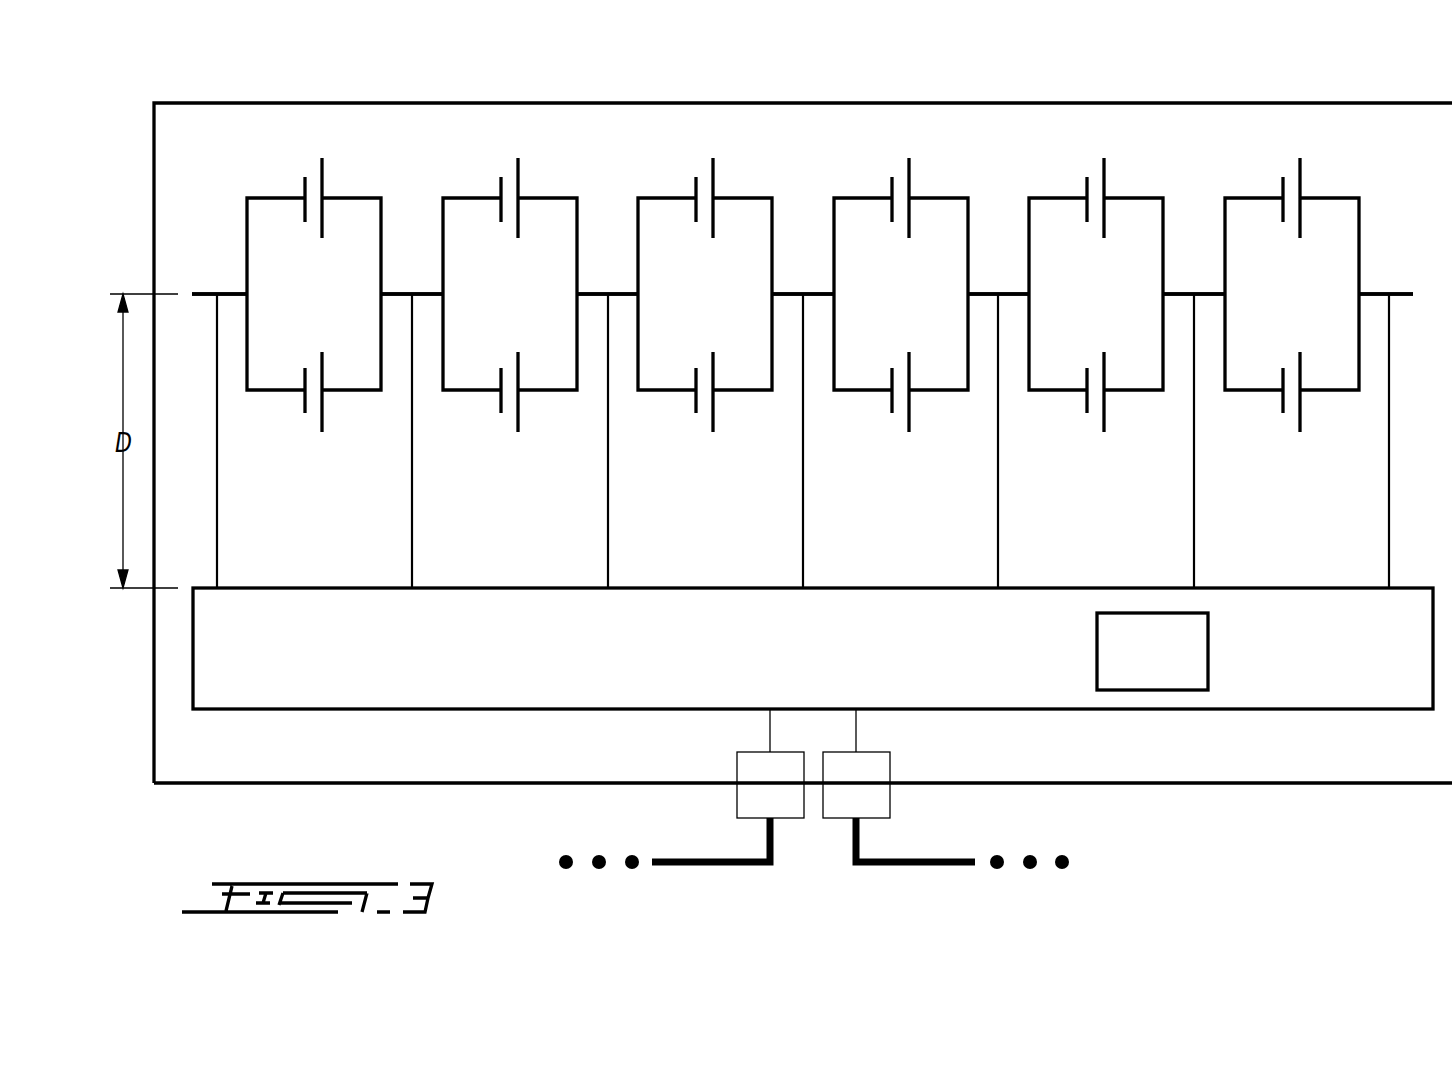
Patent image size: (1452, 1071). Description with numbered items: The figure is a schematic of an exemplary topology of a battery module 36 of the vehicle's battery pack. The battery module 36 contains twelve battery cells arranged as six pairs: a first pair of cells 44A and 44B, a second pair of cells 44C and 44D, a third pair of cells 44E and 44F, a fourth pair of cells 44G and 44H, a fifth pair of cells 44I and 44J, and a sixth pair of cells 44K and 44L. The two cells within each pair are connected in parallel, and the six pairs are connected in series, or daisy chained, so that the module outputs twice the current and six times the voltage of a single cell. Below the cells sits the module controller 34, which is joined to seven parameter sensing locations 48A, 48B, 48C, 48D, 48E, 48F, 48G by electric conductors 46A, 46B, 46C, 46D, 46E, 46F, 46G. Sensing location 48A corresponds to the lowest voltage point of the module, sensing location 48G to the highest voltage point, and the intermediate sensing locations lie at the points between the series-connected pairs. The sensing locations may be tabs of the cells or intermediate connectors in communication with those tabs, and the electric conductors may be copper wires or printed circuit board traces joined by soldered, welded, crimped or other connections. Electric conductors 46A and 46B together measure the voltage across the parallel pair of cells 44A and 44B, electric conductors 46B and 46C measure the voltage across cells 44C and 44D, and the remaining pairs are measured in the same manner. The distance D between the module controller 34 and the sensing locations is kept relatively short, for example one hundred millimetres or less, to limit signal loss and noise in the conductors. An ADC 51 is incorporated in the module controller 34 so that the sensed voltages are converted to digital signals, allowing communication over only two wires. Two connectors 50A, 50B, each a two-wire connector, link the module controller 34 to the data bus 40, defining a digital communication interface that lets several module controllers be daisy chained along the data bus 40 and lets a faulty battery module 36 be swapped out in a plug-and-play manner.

The battery module 36 is at (710, 102).
The module controller 34 is at (403, 675).
The ADC 51 is at (1208, 652).
The battery cell 44A is at (313, 180).
The battery cell 44B is at (313, 412).
The battery cell 44C is at (509, 180).
The battery cell 44D is at (509, 412).
The battery cell 44E is at (704, 180).
The battery cell 44F is at (704, 412).
The battery cell 44G is at (900, 180).
The battery cell 44H is at (900, 412).
The battery cell 44I is at (1095, 180).
The battery cell 44J is at (1095, 412).
The battery cell 44K is at (1291, 180).
The battery cell 44L is at (1291, 412).
The electric conductor 46A is at (217, 545).
The electric conductor 46B is at (412, 545).
The electric conductor 46C is at (608, 545).
The electric conductor 46D is at (803, 545).
The electric conductor 46E is at (998, 545).
The electric conductor 46F is at (1194, 545).
The electric conductor 46G is at (1389, 487).
The sensing location 48A is at (217, 293).
The sensing location 48B is at (412, 293).
The sensing location 48C is at (608, 293).
The sensing location 48D is at (803, 293).
The sensing location 48E is at (998, 293).
The sensing location 48F is at (1194, 293).
The sensing location 48G is at (1389, 293).
The connector 50A is at (752, 768).
The connector 50B is at (877, 768).
The data bus 40 is at (856, 867).